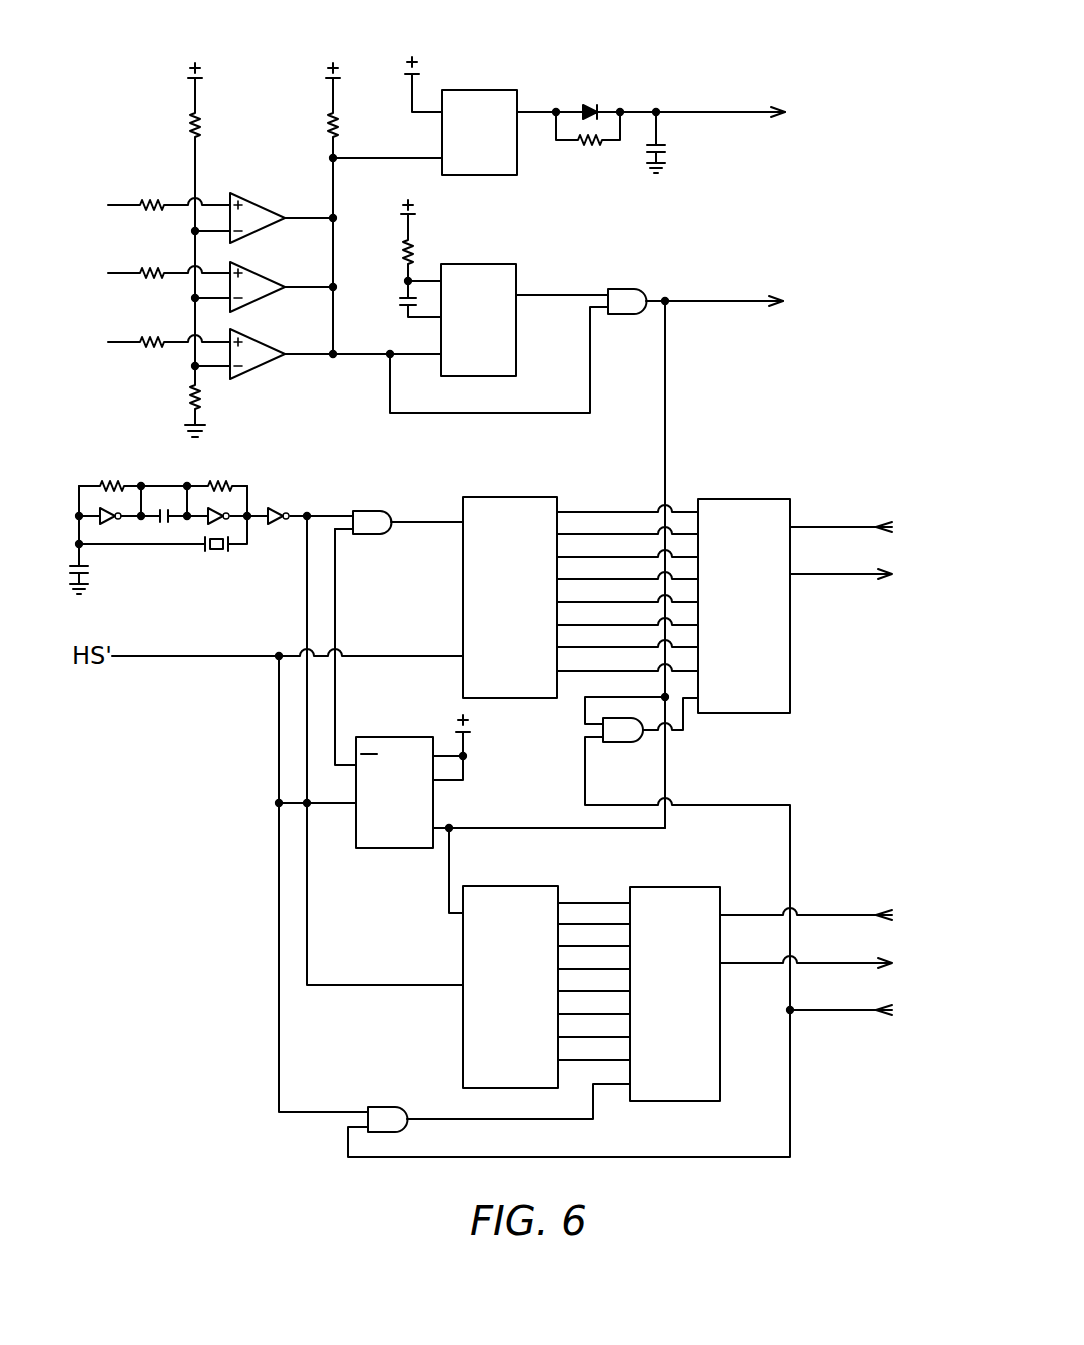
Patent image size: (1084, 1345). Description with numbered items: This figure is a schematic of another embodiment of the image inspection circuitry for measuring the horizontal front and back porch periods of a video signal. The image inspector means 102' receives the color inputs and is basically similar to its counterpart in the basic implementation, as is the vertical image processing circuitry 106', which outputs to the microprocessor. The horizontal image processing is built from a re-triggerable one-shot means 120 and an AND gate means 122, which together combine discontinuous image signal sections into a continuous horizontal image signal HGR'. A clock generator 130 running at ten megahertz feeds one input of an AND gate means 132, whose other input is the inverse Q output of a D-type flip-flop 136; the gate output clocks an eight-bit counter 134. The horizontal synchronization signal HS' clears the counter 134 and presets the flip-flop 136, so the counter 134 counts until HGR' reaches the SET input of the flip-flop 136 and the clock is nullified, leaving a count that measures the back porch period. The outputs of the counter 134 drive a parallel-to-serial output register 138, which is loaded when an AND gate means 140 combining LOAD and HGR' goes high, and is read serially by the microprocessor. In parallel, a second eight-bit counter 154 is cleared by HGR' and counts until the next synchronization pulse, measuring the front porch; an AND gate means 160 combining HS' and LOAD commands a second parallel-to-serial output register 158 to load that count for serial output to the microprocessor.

The image inspector means 102' is at (264, 218).
The vertical image processing circuitry 106' is at (601, 96).
The re-triggerable one-shot means 120 is at (483, 264).
The AND gate means 122 is at (620, 289).
The clock generator 130 is at (104, 474).
The AND gate means 132 is at (365, 511).
The 8-bit counter 134 is at (527, 497).
The D-type flip-flop 136 is at (383, 848).
The parallel-to-serial output register 138 is at (743, 499).
The AND gate means 140 is at (618, 742).
The 8-bit counter 154 is at (513, 886).
The parallel-to-serial output register 158 is at (684, 887).
The AND gate means 160 is at (387, 1107).